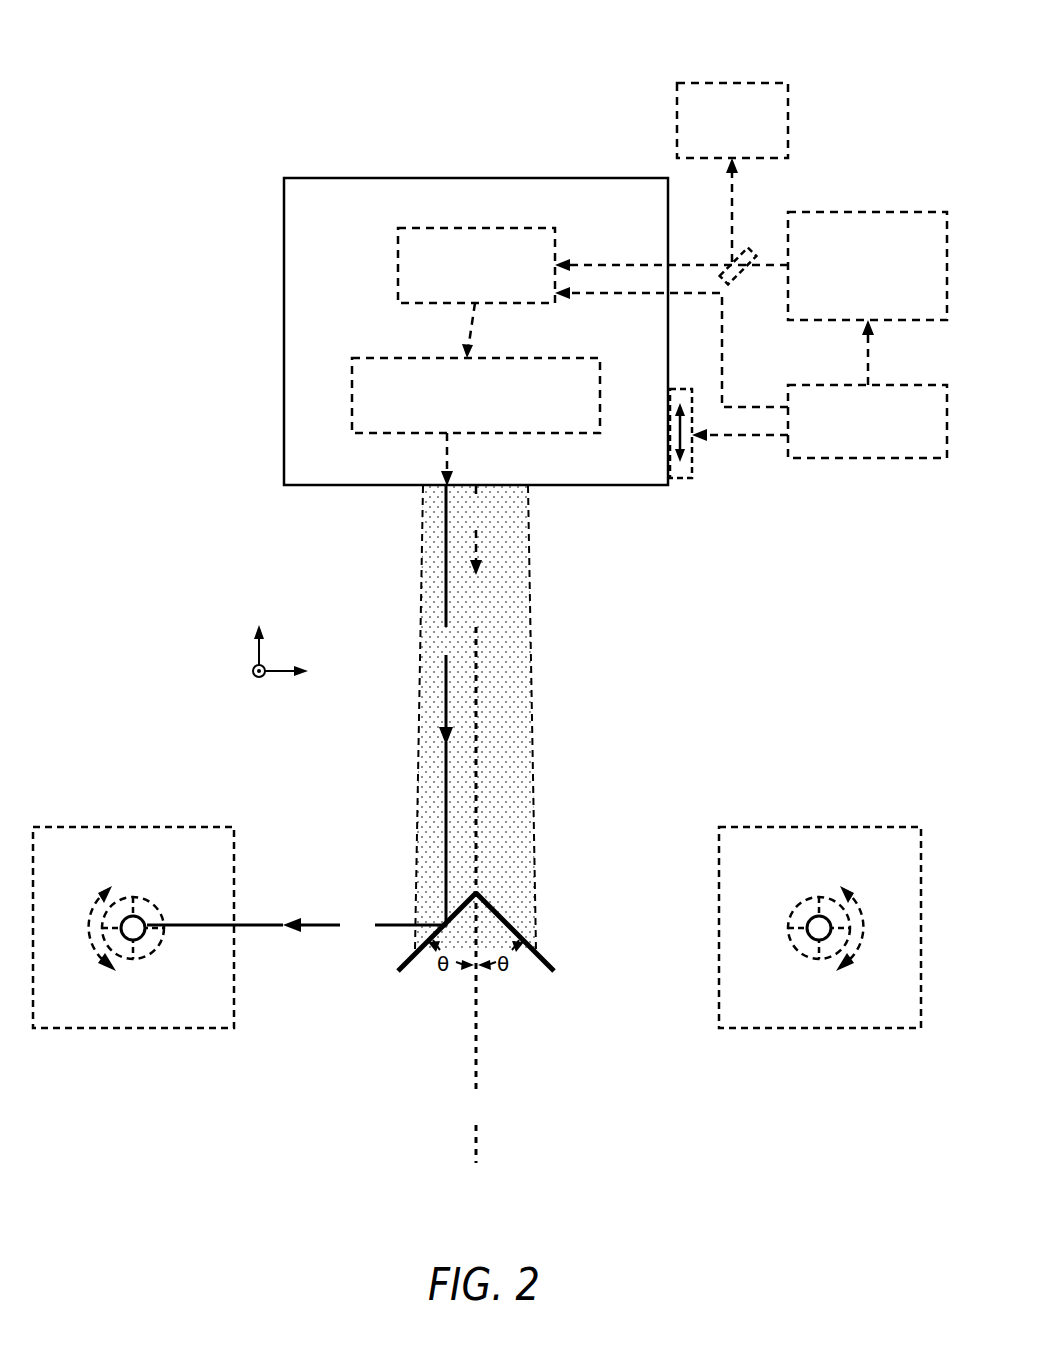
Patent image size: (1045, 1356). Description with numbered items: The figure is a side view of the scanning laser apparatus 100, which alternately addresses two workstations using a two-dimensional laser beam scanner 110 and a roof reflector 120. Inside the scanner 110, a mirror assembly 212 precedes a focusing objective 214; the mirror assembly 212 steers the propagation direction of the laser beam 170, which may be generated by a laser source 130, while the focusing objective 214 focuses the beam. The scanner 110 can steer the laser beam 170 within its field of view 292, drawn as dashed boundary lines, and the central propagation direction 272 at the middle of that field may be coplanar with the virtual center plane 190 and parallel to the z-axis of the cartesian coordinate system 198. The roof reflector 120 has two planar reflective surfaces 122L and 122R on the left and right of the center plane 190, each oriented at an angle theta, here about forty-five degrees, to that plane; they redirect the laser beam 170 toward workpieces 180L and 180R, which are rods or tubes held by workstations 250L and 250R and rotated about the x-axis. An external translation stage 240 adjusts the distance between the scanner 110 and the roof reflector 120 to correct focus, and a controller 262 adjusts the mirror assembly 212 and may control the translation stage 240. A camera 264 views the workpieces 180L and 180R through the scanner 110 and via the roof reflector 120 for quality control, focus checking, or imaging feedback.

The scanning laser apparatus 100 is at (138, 57).
The 2D laser beam scanner 110 is at (476, 331).
The roof reflector 120 is at (496, 953).
The left reflective surface 122L is at (406, 971).
The right reflective surface 122R is at (546, 973).
The laser source 130 is at (867, 266).
The laser beam 170 is at (305, 712).
The left workpiece 180L is at (143, 937).
The right workpiece 180R is at (809, 937).
The virtual center plane 190 is at (477, 895).
The cartesian coordinate system 198 is at (232, 660).
The mirror assembly 212 is at (476, 265).
The focusing objective 214 is at (476, 395).
The translation stage 240 is at (681, 481).
The left workstation 250L is at (133, 927).
The right workstation 250R is at (820, 927).
The controller 262 is at (867, 421).
The camera 264 is at (732, 120).
The central propagation direction 272 is at (476, 530).
The field of view 292 is at (533, 725).